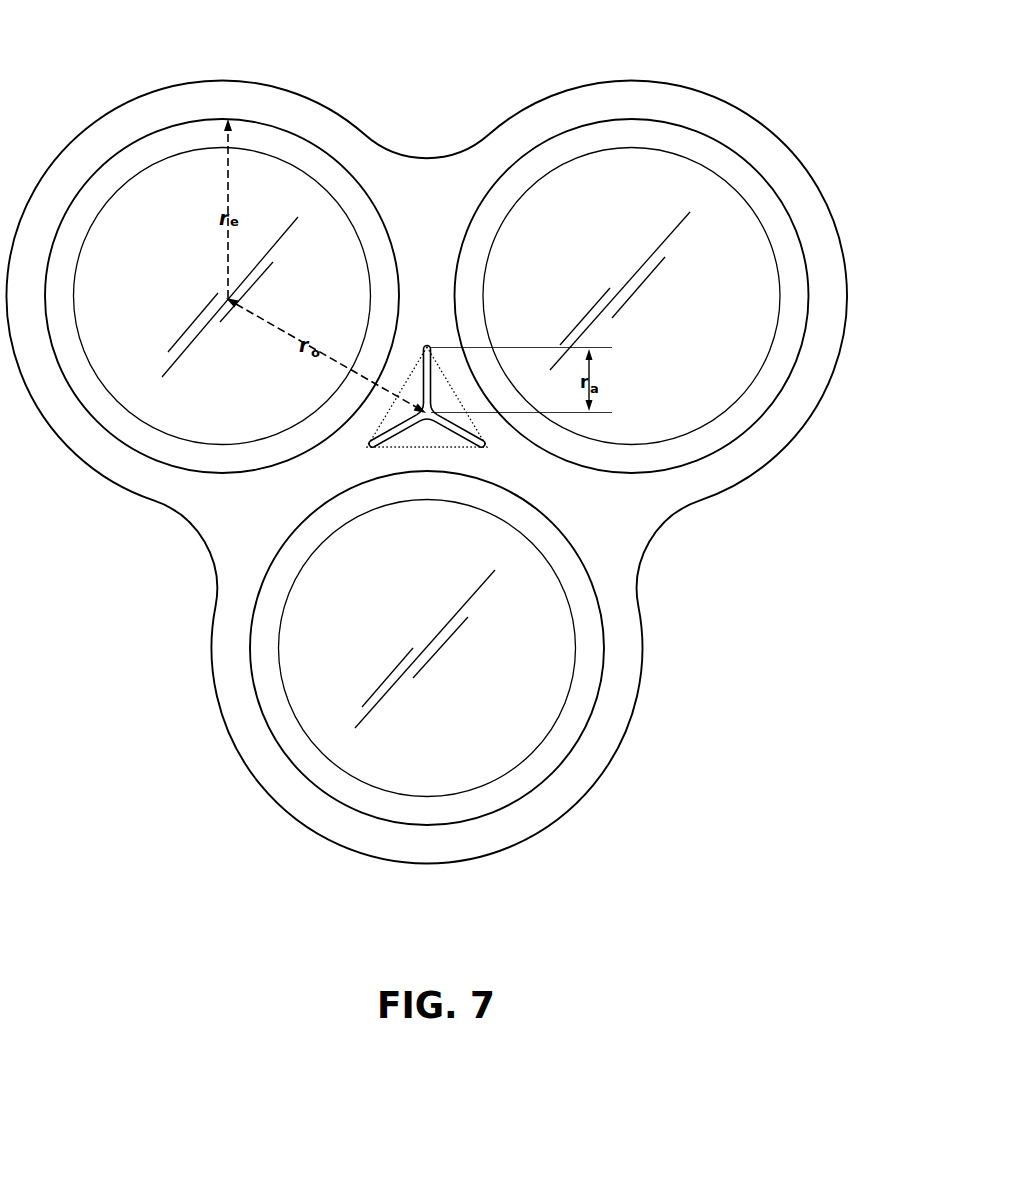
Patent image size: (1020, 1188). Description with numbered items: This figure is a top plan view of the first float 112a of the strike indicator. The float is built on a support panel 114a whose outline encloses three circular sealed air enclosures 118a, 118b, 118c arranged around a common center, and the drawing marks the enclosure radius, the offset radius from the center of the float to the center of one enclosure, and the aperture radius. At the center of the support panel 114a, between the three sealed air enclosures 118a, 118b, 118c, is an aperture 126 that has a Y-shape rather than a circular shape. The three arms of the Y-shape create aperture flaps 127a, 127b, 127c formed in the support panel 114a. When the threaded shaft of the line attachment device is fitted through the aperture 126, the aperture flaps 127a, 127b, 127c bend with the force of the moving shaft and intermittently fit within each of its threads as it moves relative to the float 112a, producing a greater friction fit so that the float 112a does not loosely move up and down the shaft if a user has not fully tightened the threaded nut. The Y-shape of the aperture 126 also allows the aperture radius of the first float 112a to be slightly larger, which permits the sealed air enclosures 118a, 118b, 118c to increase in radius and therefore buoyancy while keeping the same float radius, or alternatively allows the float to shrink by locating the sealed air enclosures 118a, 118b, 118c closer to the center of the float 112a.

The first float 112a is at (834, 511).
The support panel 114a is at (202, 513).
The sealed air enclosure 118a is at (243, 163).
The sealed air enclosure 118b is at (752, 248).
The sealed air enclosure 118c is at (540, 710).
The aperture 126 is at (425, 384).
The aperture flap 127a is at (412, 395).
The aperture flap 127b is at (448, 403).
The aperture flap 127c is at (422, 433).